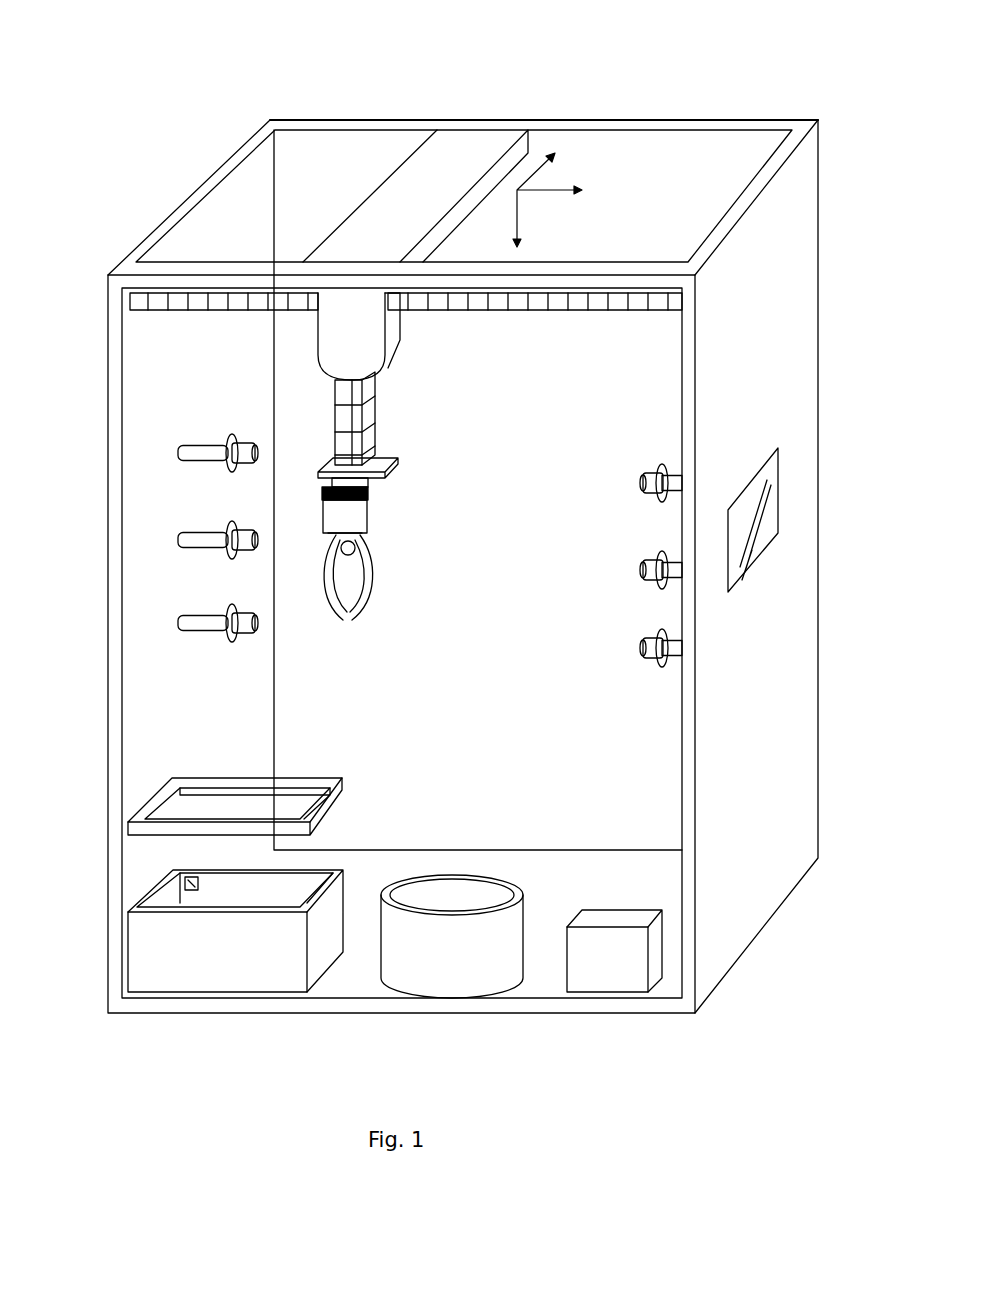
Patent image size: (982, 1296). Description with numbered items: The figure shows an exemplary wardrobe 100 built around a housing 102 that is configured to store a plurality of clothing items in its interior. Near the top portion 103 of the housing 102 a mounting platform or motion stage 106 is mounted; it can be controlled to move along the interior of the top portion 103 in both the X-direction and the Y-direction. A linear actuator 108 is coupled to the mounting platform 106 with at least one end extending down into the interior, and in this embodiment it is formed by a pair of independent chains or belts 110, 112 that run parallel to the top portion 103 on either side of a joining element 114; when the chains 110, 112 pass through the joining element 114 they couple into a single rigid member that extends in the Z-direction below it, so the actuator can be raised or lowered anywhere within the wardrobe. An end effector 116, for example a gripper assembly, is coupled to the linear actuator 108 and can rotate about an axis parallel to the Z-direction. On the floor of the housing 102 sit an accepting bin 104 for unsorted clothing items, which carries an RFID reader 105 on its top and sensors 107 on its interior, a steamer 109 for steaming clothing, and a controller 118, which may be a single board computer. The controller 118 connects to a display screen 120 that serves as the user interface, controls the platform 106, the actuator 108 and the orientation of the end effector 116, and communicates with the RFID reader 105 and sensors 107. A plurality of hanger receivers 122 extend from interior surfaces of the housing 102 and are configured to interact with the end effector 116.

The wardrobe 100 is at (147, 119).
The housing 102 is at (782, 227).
The top portion 103 is at (312, 120).
The accepting bin 104 is at (255, 965).
The RFID reader 105 is at (342, 793).
The mounting platform 106 is at (467, 153).
The sensors 107 is at (178, 873).
The linear actuator 108 is at (403, 421).
The steamer 109 is at (473, 957).
The independent chain 110 is at (182, 303).
The independent chain 112 is at (580, 300).
The joining element 114 is at (367, 352).
The end effector 116 is at (362, 518).
The controller 118 is at (617, 960).
The display screen 120 is at (773, 518).
The hanger receivers 122 is at (203, 625).